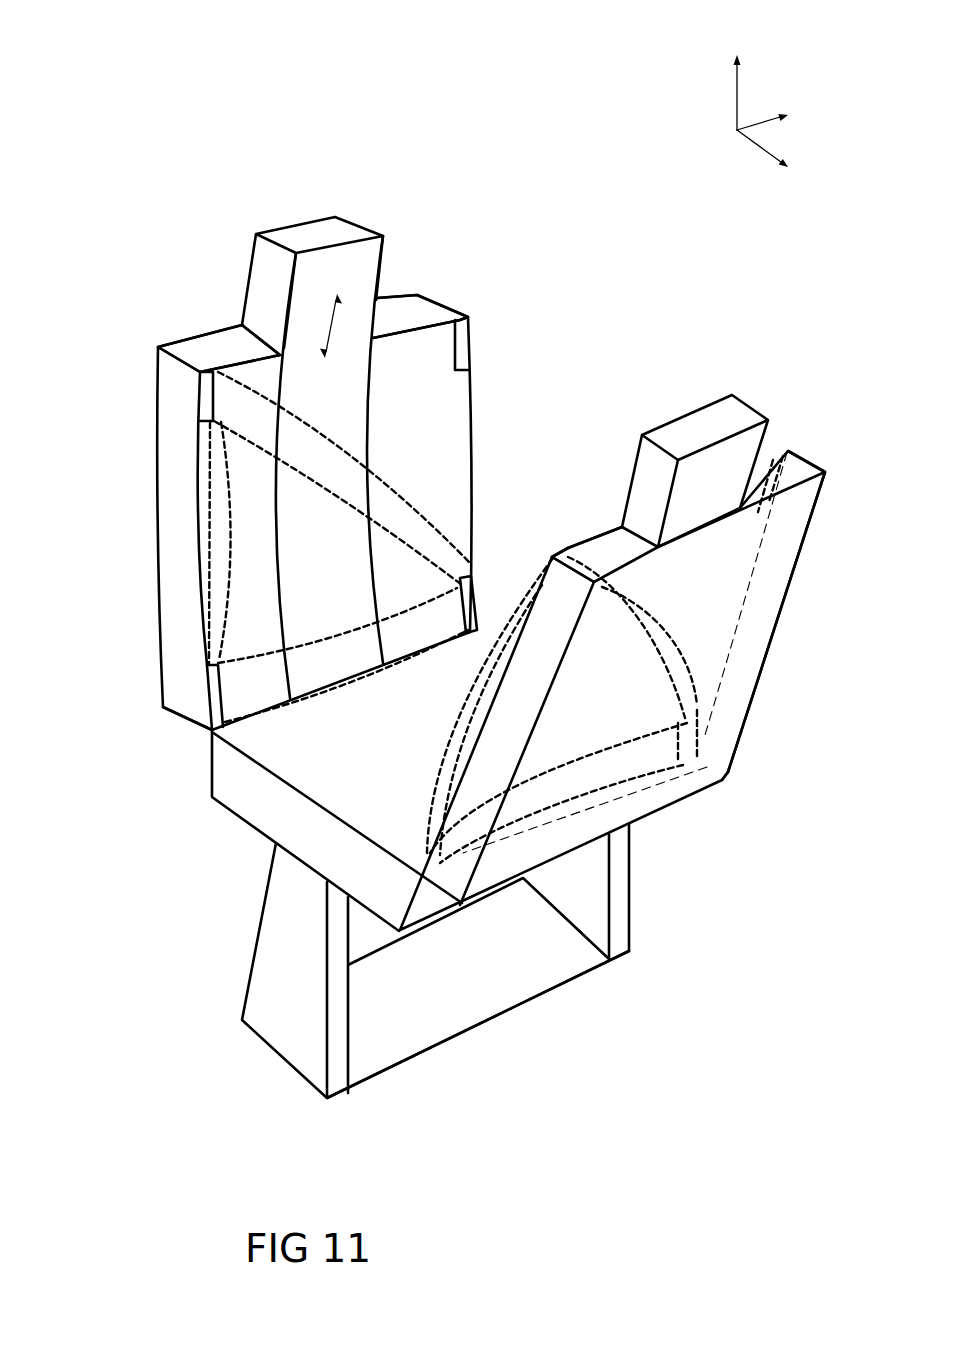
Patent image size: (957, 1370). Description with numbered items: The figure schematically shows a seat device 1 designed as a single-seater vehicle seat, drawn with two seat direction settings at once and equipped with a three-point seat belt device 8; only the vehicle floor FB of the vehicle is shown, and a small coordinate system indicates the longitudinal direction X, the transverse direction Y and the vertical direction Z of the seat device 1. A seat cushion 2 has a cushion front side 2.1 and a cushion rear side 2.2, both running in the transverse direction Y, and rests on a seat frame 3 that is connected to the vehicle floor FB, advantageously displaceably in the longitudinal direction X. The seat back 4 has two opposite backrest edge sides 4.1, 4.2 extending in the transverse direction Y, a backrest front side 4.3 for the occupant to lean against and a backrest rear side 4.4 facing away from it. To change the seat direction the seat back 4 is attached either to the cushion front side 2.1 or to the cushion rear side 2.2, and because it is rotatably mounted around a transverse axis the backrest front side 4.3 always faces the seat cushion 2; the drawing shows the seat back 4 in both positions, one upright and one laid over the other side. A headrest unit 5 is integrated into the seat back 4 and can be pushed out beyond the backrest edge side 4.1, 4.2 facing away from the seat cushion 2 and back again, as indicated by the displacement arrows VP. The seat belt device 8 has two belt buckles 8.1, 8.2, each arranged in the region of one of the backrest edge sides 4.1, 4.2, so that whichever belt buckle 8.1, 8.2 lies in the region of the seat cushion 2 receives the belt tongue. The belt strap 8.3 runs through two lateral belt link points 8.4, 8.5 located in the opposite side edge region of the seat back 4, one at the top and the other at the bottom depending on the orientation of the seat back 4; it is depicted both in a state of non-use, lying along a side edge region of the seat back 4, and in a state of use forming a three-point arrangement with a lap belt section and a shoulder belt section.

The seat device 1 is at (118, 208).
The seat cushion 2 is at (315, 775).
The cushion front side 2.1 is at (433, 903).
The cushion rear side 2.2 is at (212, 765).
The seat frame 3 is at (262, 1002).
The seat back 4 is at (163, 468).
The backrest edge side 4.1 is at (210, 348).
The backrest edge side 4.2 is at (175, 710).
The backrest front side 4.3 is at (417, 347).
The backrest rear side 4.4 is at (773, 560).
The headrest unit 5 is at (320, 230).
The three-point seat belt device 8 is at (390, 512).
The belt buckle 8.1 is at (472, 593).
The belt buckle 8.2 is at (460, 345).
The belt strap 8.3 is at (220, 558).
The belt link point 8.4 is at (213, 697).
The belt link point 8.5 is at (207, 403).
The displacement arrows VP is at (333, 290).
The vehicle floor FB is at (405, 1037).
The longitudinal direction X is at (776, 159).
The transverse direction Y is at (771, 115).
The vertical direction Z is at (749, 82).